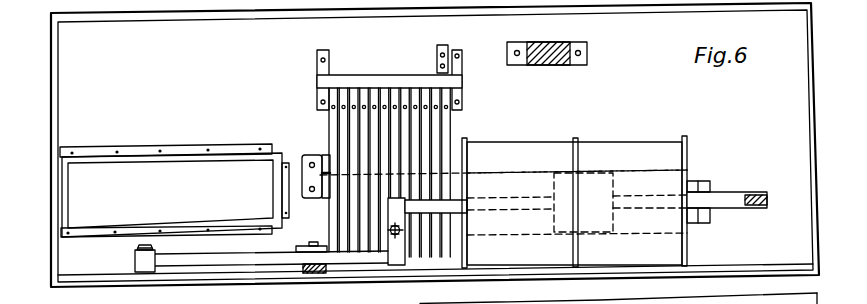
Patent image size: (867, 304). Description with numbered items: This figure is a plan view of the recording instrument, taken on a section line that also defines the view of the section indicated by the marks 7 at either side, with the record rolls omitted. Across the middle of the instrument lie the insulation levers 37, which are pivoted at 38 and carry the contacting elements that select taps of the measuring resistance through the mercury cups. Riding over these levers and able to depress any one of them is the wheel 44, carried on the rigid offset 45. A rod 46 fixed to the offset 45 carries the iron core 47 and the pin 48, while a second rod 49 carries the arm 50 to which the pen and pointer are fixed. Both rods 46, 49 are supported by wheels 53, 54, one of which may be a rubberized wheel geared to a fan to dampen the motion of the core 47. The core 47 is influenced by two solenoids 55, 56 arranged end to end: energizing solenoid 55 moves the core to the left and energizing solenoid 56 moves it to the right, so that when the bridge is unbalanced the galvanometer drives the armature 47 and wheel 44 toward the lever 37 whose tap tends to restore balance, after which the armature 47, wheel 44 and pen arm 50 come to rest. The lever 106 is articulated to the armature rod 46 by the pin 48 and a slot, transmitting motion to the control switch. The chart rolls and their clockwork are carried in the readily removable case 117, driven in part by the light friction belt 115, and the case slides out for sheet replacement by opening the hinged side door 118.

The section line 7- 7 is at (53, 283).
The insulation levers 37 is at (329, 128).
The pivot 38 is at (316, 200).
The wheel 44 is at (407, 230).
The rigid offset 45 is at (401, 266).
The rod 46 is at (507, 195).
The iron core 47 is at (615, 179).
The pin 48 is at (764, 210).
The rod 49 is at (256, 252).
The arm 50 is at (135, 252).
The wheel 53 is at (321, 242).
The wheel 54 is at (714, 173).
The solenoid 55 is at (534, 142).
The solenoid 56 is at (644, 142).
The lever 106 is at (769, 200).
The friction belt 115 is at (452, 298).
The removable case 117 is at (212, 168).
The hinged side door 118 is at (56, 139).